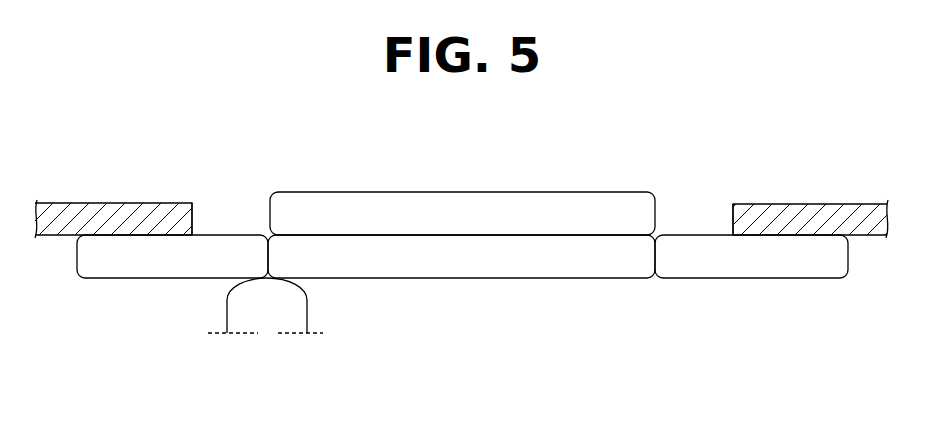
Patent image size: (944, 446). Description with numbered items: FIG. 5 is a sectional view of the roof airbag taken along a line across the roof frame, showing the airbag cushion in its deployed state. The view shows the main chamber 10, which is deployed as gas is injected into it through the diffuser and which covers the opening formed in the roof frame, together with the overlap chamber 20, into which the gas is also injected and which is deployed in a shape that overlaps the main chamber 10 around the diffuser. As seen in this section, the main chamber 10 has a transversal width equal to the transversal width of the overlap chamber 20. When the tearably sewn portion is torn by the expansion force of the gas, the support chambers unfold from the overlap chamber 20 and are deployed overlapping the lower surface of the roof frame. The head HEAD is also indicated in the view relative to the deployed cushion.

The main chamber 10 is at (472, 200).
The overlap chamber 20 is at (480, 268).
The head HEAD is at (266, 322).